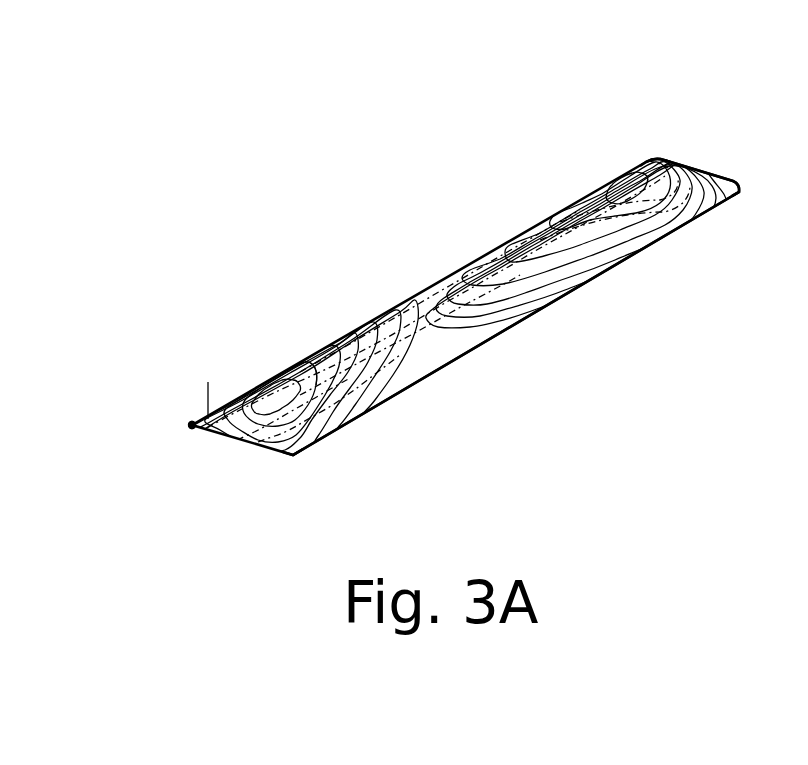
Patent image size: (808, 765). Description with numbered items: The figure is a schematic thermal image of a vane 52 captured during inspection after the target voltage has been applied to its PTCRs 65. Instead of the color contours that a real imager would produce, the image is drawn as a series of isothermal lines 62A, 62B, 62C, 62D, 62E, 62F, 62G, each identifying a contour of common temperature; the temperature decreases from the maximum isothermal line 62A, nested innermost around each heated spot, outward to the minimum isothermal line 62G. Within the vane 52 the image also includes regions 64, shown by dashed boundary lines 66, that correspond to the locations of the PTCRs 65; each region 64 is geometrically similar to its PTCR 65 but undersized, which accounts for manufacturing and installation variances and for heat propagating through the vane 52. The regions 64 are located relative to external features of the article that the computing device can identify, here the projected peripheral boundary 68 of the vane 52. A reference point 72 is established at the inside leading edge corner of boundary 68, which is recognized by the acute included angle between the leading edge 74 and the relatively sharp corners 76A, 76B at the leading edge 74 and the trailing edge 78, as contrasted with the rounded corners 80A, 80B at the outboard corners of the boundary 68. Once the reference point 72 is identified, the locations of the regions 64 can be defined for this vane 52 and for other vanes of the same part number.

The vane 52 is at (400, 182).
The maximum isothermal line 62A is at (450, 293).
The isothermal line 62B is at (457, 294).
The isothermal line 62C is at (452, 302).
The isothermal line 62D is at (448, 308).
The isothermal line 62E is at (446, 312).
The isothermal line 62F is at (448, 318).
The minimum isothermal line 62G is at (448, 318).
The region 64 is at (437, 294).
The PTCR 65 is at (463, 312).
The boundary line 66 is at (468, 310).
The projected peripheral boundary 68 is at (722, 172).
The reference point 72 is at (190, 424).
The leading edge 74 is at (311, 373).
The sharp corner 76A is at (192, 425).
The sharp corner 76B is at (293, 457).
The trailing edge 78 is at (470, 350).
The rounded corner 80A is at (657, 158).
The rounded corner 80B is at (742, 187).